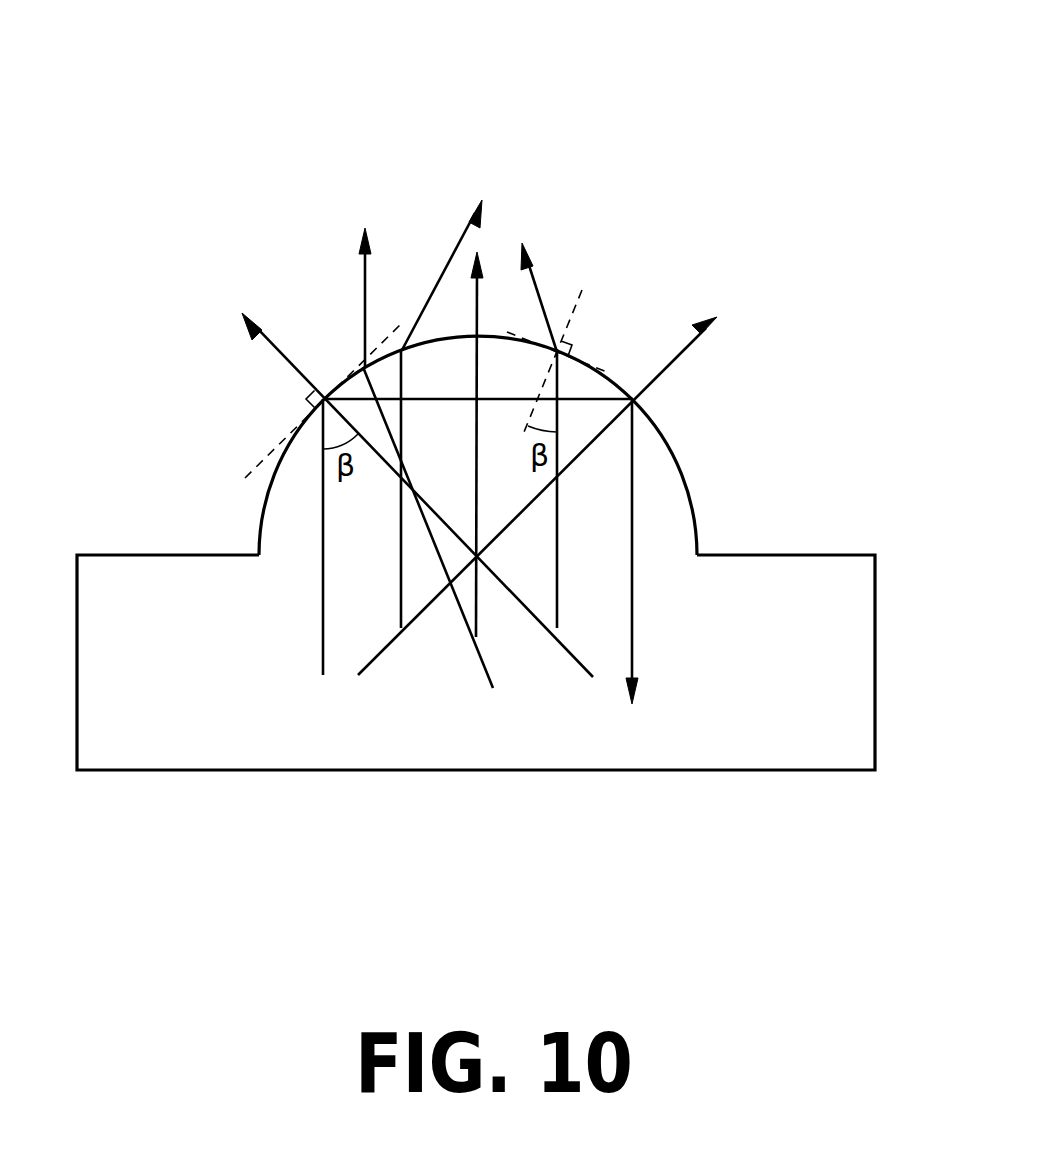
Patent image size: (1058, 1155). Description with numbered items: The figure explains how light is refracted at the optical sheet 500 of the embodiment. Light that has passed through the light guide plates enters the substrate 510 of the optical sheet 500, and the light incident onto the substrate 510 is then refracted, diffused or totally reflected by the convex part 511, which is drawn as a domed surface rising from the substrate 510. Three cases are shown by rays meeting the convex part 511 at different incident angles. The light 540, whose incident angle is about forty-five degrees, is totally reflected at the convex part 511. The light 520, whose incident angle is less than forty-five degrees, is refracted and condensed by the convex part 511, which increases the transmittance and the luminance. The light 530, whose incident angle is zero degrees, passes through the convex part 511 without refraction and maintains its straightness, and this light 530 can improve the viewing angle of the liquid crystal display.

The optical sheet 500 is at (476, 447).
The substrate 510 is at (775, 723).
The convex part 511 is at (687, 477).
The light 520 is at (545, 293).
The light 530 is at (477, 307).
The light 540 is at (322, 500).